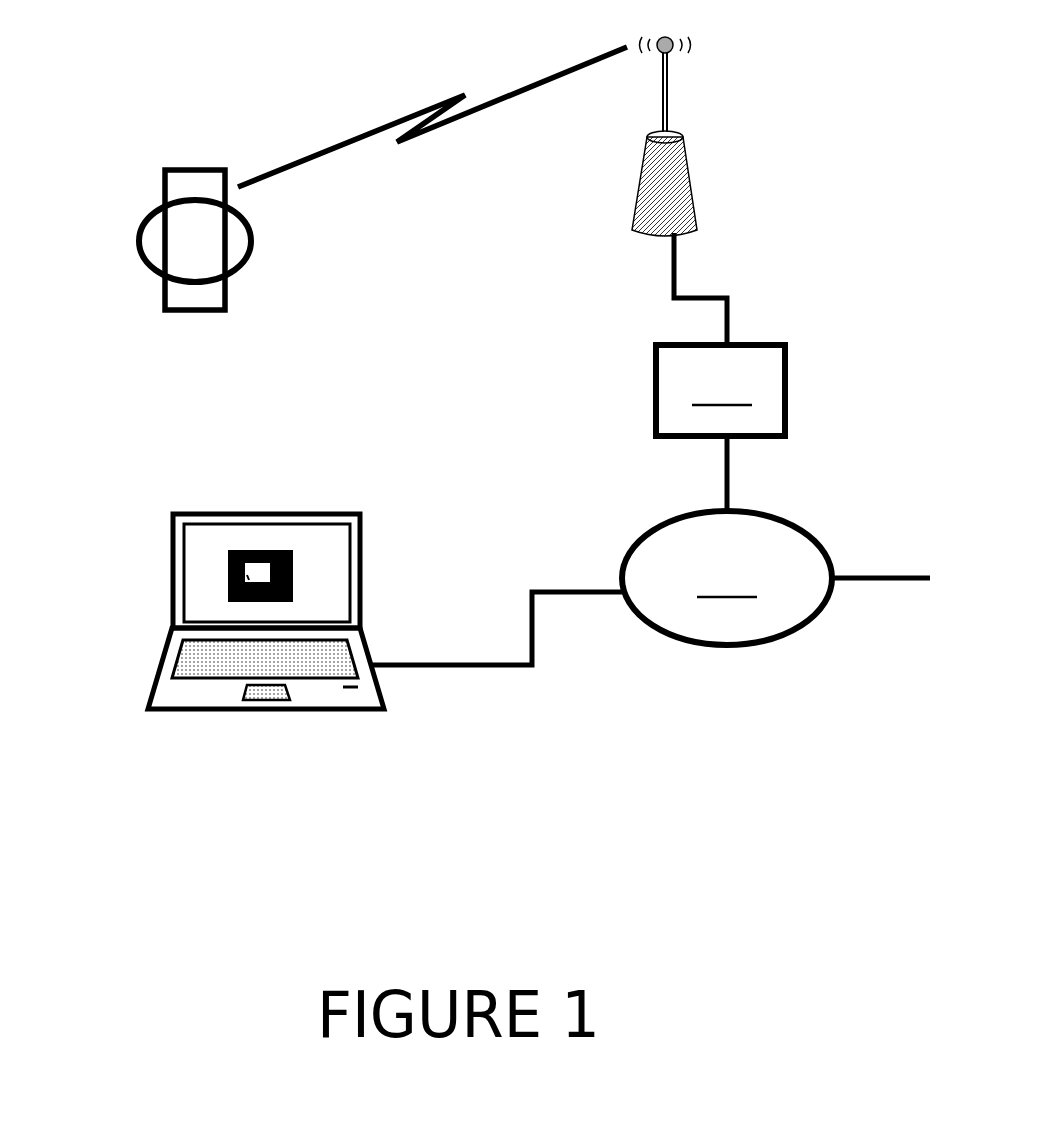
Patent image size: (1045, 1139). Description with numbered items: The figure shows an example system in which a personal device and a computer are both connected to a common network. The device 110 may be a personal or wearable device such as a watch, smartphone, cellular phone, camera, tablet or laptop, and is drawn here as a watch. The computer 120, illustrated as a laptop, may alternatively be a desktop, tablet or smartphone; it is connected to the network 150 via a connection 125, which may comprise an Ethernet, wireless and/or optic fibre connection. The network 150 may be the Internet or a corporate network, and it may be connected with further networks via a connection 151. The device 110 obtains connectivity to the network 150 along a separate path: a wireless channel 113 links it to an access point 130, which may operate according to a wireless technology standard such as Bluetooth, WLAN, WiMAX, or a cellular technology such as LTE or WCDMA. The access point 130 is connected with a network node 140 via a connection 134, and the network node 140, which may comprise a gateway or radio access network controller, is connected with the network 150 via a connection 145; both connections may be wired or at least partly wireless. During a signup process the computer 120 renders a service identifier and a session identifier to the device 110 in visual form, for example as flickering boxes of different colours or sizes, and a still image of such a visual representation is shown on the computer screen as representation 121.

The device 110 is at (160, 282).
The wireless channel 113 is at (405, 115).
The computer 120 is at (255, 712).
The representation 121 is at (230, 590).
The connection 125 is at (487, 672).
The access point 130 is at (695, 205).
The connection 134 is at (735, 298).
The network node 140 is at (720, 390).
The connection 145 is at (718, 485).
The network 150 is at (727, 578).
The connection 151 is at (867, 580).